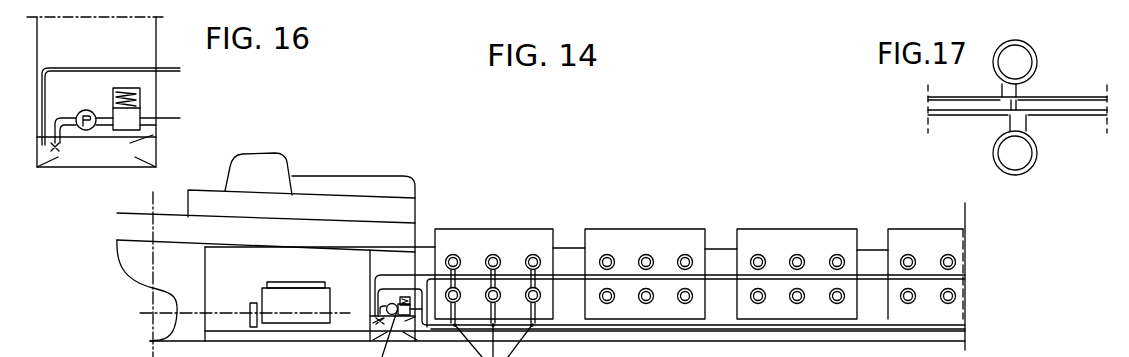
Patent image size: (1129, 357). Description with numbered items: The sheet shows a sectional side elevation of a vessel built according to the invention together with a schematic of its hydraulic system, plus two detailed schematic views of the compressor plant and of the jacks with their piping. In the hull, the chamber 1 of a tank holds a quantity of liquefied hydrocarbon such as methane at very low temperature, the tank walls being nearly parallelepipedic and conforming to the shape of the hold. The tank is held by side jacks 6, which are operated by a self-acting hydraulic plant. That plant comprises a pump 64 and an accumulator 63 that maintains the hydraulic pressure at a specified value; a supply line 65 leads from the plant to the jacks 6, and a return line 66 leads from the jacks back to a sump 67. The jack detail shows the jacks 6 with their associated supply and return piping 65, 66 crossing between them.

In FIG. 14, the chamber 1 is at (535, 240).
In FIG. 14, the side jack 6 is at (533, 262).
In FIG. 17, the side jack 6 is at (1015, 62).
In FIG. 16, the accumulator 63 is at (128, 117).
In FIG. 16, the pump 64 is at (88, 125).
In FIG. 16, the supply line 65 is at (168, 120).
In FIG. 17, the supply line 65 is at (960, 113).
In FIG. 16, the return line 66 is at (67, 68).
In FIG. 17, the return line 66 is at (1055, 99).
In FIG. 16, the sump 67 is at (75, 148).